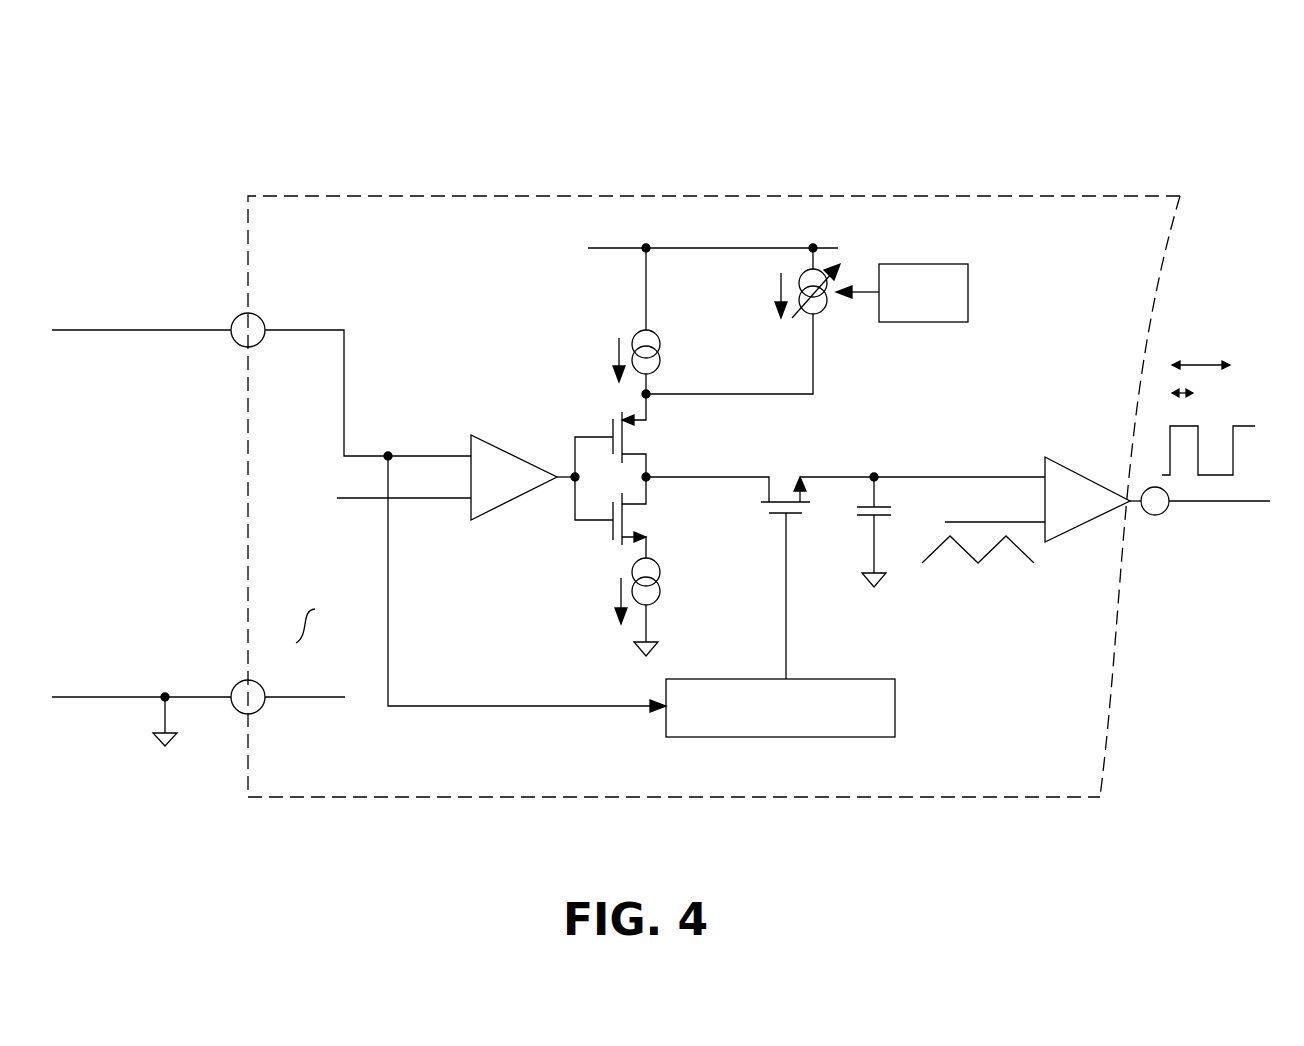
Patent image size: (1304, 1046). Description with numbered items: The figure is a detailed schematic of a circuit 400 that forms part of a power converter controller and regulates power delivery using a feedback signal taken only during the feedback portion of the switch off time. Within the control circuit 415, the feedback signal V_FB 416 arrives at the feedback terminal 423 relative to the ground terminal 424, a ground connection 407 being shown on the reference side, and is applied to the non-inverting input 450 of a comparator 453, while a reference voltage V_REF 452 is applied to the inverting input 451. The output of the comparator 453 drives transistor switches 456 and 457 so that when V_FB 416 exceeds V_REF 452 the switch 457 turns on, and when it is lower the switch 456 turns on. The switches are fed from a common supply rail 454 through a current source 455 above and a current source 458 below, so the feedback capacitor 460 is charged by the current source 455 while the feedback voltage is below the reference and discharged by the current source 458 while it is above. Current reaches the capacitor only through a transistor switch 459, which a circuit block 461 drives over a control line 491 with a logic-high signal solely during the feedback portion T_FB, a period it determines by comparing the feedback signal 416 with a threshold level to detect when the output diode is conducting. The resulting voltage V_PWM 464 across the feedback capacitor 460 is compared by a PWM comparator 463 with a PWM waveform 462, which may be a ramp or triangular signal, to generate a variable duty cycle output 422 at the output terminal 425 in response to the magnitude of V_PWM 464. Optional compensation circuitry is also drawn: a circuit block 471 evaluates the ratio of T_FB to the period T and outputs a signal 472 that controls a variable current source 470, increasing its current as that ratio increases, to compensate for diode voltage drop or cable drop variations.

The circuit 400 is at (133, 95).
The control circuit 415 is at (342, 802).
The feedback signal V_FB 416 is at (148, 497).
The feedback terminal 423 is at (270, 322).
The ground terminal 424 is at (235, 677).
The ground reference 407 is at (153, 732).
The reference voltage V_REF 452 is at (288, 676).
The non-inverting input 450 is at (452, 440).
The comparator 453 is at (498, 445).
The inverting input 451 is at (459, 503).
The supply rail 454 is at (698, 248).
The current source I1 455 is at (588, 340).
The switch 456 is at (655, 432).
The switch 457 is at (650, 528).
The current source I2 458 is at (587, 593).
The PWM comparator 463 is at (1077, 463).
The variable current source 470 is at (750, 280).
The circuit block 471 is at (968, 320).
The signal 472 is at (862, 302).
The switch 459 is at (780, 468).
The switch gate control line 491 is at (770, 588).
The feedback capacitor 460 is at (885, 490).
The voltage V_PWM 464 is at (846, 490).
The PWM waveform 462 is at (1020, 570).
The output terminal 425 is at (1177, 515).
The variable duty cycle output 422 is at (1255, 515).
The circuit block 461 is at (906, 665).